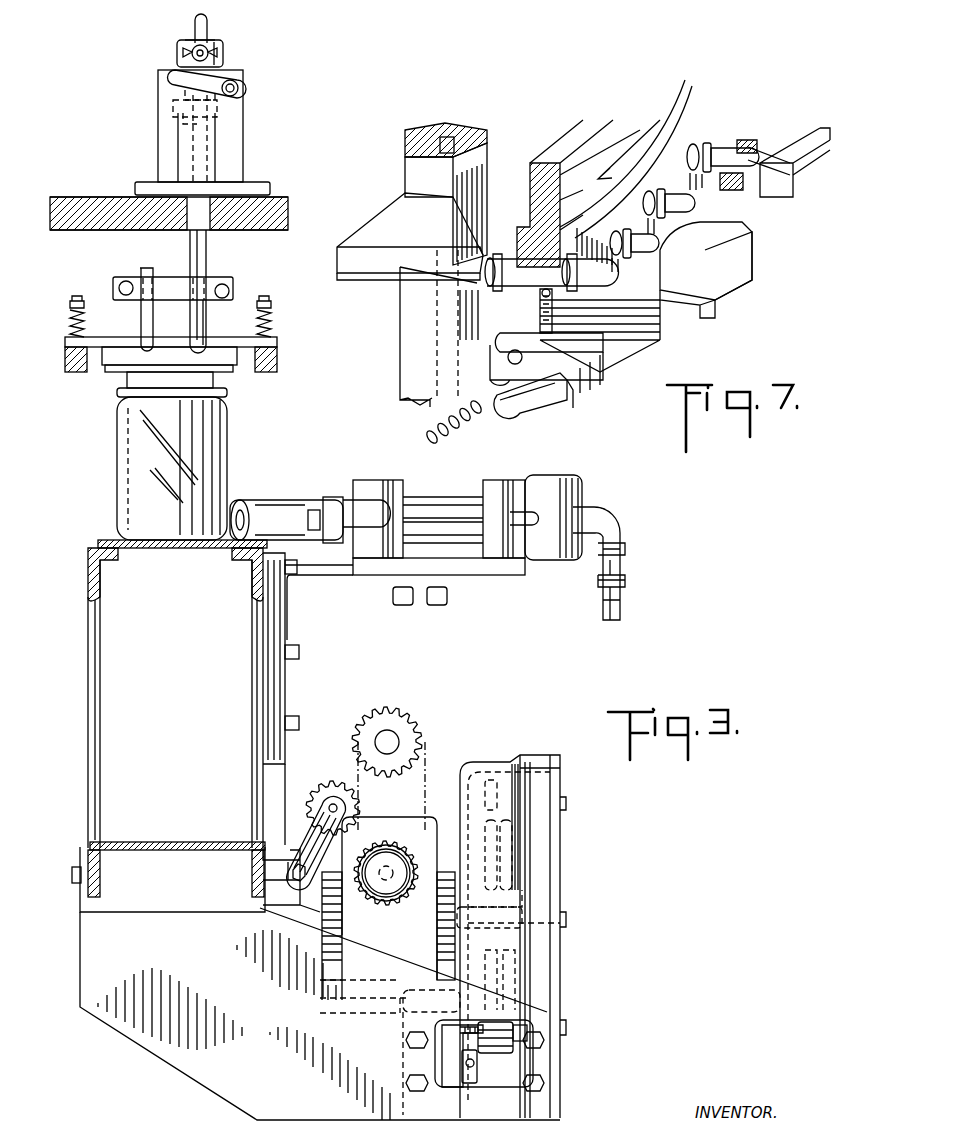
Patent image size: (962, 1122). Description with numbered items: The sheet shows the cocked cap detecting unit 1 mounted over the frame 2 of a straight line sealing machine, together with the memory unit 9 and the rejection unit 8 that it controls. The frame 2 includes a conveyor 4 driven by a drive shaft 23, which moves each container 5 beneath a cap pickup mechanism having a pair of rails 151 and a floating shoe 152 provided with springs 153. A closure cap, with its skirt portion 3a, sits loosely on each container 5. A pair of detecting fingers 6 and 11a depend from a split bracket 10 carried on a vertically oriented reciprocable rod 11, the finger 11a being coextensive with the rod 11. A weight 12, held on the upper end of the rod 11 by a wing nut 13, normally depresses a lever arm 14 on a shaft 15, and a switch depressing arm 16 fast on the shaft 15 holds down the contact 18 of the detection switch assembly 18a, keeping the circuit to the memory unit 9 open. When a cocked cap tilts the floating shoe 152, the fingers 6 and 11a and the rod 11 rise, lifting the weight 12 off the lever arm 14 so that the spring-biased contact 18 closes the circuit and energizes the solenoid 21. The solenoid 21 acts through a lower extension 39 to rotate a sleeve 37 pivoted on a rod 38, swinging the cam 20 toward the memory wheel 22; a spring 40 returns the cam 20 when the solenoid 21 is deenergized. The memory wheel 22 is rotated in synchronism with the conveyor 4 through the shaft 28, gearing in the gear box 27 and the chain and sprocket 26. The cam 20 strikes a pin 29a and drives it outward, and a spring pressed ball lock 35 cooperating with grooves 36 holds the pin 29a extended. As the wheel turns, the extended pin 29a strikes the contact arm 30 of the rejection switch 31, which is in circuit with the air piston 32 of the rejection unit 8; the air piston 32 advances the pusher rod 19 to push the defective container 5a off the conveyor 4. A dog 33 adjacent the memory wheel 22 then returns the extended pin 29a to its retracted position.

In FIG. 3, the cocked cap detecting unit 1 is at (279, 67).
In FIG. 3, the frame 2 is at (78, 588).
In FIG. 3, the skirt portion 3a is at (127, 385).
In FIG. 3, the conveyor 4 is at (100, 540).
In FIG. 3, the container 5 is at (246, 28).
In FIG. 3, the defective container 5a is at (117, 456).
In FIG. 3, the detecting finger 6 is at (140, 325).
In FIG. 3, the rejection unit 8 is at (378, 463).
In FIG. 3, the memory unit 9 is at (590, 877).
In FIG. 7, the memory unit 9 is at (637, 386).
In FIG. 3, the split bracket 10 is at (233, 284).
In FIG. 3, the reciprocable rod 11 is at (196, 18).
In FIG. 3, the feeler finger 11a is at (205, 333).
In FIG. 3, the weight 12 is at (177, 52).
In FIG. 3, the wing nut 13 is at (195, 42).
In FIG. 3, the lever arm 14 is at (176, 77).
In FIG. 3, the shaft 15 is at (240, 86).
In FIG. 3, the switch depressing arm 16 is at (184, 95).
In FIG. 3, the contact 18 is at (240, 106).
In FIG. 3, the detection switch assembly 18a is at (182, 114).
In FIG. 3, the pusher rod 19 is at (254, 502).
In FIG. 3, the cam 20 is at (470, 1027).
In FIG. 7, the cam 20 is at (376, 228).
In FIG. 3, the solenoid 21 is at (486, 1082).
In FIG. 7, the solenoid 21 is at (618, 380).
In FIG. 3, the memory wheel 22 is at (512, 843).
In FIG. 7, the memory wheel 22 is at (560, 150).
In FIG. 3, the drive shaft 23 is at (390, 741).
In FIG. 3, the chain and sprocket 26 is at (418, 754).
In FIG. 3, the gear box 27 is at (387, 915).
In FIG. 3, the shaft 28 is at (530, 925).
In FIG. 3, the pin 29a is at (527, 1027).
In FIG. 7, the pin 29a is at (700, 146).
In FIG. 7, the contact arm 30 is at (748, 138).
In FIG. 7, the rejection switch 31 is at (793, 200).
In FIG. 3, the air piston 32 is at (572, 477).
In FIG. 7, the dog 33 is at (735, 280).
In FIG. 7, the spring pressed ball lock 35 is at (555, 311).
In FIG. 7, the grooves 36 is at (535, 256).
In FIG. 3, the sleeve 37 is at (445, 1050).
In FIG. 7, the sleeve 37 is at (483, 140).
In FIG. 7, the rod 38 is at (455, 140).
In FIG. 3, the lower extension 39 is at (459, 1066).
In FIG. 7, the lower extension 39 is at (490, 335).
In FIG. 7, the spring 40 is at (445, 432).
In FIG. 3, the rails 151 is at (66, 360).
In FIG. 3, the floating shoe 152 is at (238, 365).
In FIG. 3, the springs 153 is at (68, 325).